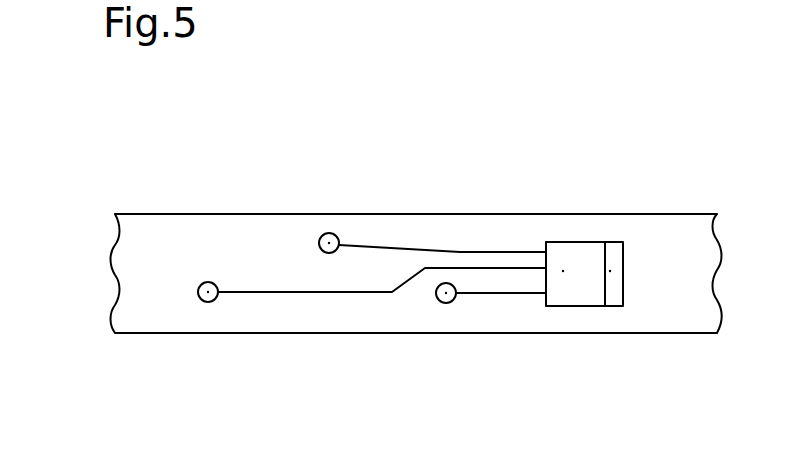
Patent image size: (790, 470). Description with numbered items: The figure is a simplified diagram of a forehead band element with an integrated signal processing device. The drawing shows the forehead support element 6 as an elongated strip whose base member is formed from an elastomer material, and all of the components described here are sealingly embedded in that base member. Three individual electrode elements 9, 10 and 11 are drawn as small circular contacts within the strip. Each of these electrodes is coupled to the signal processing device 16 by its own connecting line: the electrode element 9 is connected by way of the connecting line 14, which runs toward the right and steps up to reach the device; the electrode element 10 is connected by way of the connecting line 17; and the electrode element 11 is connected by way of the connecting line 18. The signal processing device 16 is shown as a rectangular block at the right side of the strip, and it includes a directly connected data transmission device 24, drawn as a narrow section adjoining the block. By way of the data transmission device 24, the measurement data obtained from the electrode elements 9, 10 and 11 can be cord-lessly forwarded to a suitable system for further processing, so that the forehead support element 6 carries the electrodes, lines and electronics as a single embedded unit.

The forehead support element 6 is at (202, 250).
The electrode element 9 is at (206, 302).
The electrode element 10 is at (329, 243).
The electrode element 11 is at (443, 303).
The connecting line 14 is at (305, 292).
The signal processing device 16 is at (563, 271).
The connecting line 17 is at (460, 251).
The connecting line 18 is at (500, 294).
The data transmission device 24 is at (610, 271).